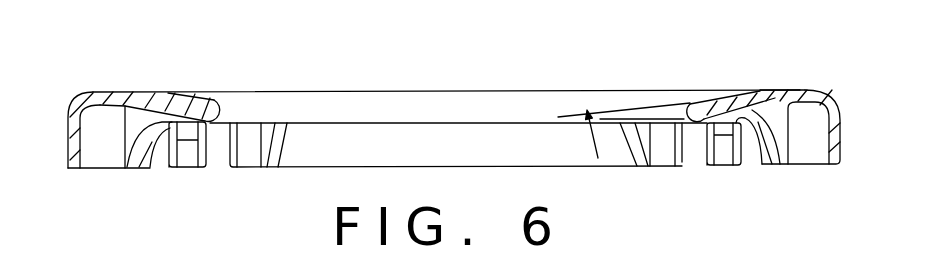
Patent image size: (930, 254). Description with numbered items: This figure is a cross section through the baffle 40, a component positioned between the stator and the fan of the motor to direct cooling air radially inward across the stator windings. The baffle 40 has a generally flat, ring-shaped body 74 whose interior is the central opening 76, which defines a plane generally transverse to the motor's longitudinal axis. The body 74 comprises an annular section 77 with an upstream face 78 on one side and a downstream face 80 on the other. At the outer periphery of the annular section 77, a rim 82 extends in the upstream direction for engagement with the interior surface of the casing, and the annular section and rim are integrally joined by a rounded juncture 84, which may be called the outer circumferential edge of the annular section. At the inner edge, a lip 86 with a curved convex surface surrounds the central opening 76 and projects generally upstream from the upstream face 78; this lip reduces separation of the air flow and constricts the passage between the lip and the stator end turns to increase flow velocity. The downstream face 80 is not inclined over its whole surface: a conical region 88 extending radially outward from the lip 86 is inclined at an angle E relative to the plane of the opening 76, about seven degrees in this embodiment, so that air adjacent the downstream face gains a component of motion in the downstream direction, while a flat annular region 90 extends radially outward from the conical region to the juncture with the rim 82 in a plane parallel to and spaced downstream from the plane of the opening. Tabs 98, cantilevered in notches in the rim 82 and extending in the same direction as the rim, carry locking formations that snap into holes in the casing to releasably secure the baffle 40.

The baffle 40 is at (473, 88).
The body 74 is at (407, 90).
The central opening 76 is at (333, 123).
The annular section 77 is at (190, 93).
The upstream face 78 is at (774, 112).
The downstream face 80 is at (759, 84).
The rim 82 is at (67, 143).
The rounded juncture 84 is at (837, 97).
The lip 86 is at (227, 112).
The conical region 88 is at (700, 96).
The flat annular region 90 is at (803, 88).
The tabs 98 is at (187, 170).
The angle E is at (585, 88).